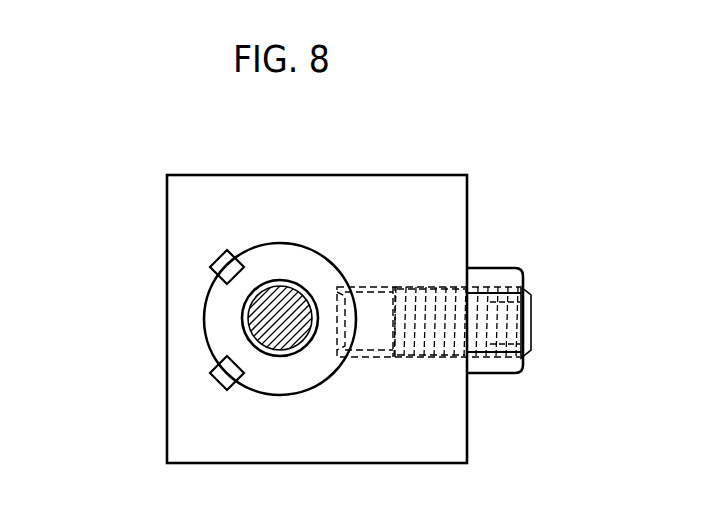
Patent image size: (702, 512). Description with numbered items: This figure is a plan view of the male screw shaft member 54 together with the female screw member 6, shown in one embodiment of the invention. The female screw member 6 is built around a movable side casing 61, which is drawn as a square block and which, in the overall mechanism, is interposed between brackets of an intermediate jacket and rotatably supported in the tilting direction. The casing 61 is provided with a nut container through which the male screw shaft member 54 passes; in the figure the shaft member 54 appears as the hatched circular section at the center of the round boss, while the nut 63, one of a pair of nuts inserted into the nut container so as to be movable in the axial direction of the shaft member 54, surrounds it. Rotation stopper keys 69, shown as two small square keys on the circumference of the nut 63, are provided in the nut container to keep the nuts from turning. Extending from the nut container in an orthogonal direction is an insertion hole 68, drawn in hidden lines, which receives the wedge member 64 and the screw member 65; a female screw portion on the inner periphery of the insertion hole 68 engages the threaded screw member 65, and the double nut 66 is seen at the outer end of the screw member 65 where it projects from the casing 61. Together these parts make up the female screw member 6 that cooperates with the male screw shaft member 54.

The female screw member 6 is at (130, 240).
The male screw shaft member 54 is at (250, 310).
The movable side casing 61 is at (177, 348).
The nut 63 is at (265, 257).
The wedge member 64 is at (363, 285).
The screw member 65 is at (418, 283).
The double nut 66 is at (512, 277).
The insertion hole 68 is at (405, 355).
The rotation stopper key 69 is at (216, 258).